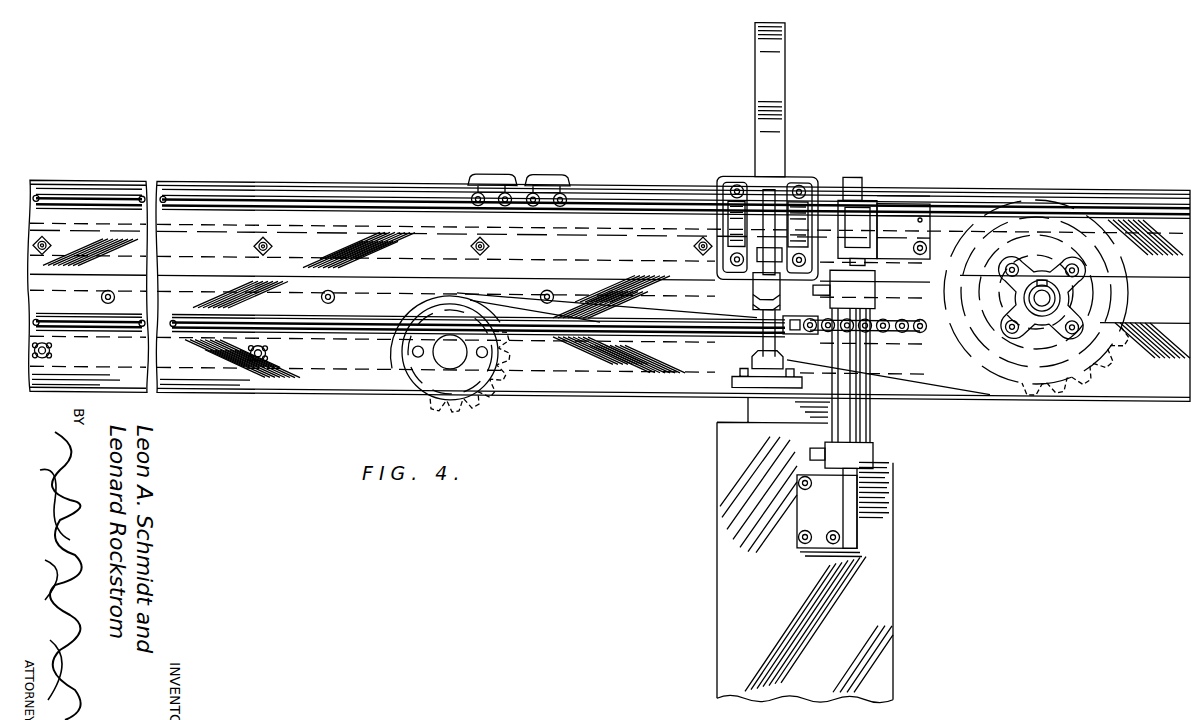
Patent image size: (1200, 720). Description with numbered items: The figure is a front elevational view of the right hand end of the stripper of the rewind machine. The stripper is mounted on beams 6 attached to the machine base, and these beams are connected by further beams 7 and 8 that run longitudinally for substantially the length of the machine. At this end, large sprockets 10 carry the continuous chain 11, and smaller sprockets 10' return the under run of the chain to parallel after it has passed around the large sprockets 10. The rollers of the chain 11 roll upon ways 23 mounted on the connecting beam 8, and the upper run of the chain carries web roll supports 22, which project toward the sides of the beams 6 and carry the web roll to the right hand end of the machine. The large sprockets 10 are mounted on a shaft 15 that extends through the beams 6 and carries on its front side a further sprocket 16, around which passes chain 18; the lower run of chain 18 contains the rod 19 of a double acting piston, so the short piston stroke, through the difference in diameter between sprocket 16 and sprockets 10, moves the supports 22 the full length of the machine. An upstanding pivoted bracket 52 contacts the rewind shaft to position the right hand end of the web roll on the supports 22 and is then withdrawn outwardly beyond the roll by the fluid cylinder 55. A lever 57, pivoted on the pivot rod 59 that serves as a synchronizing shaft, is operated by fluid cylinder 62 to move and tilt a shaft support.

The beams 6 is at (262, 391).
The beam 7 is at (288, 368).
The beam 8 is at (93, 221).
The sprockets 10 is at (1052, 297).
The smaller sprockets 10' is at (464, 361).
The chain 11 is at (258, 288).
The shaft 15 is at (1043, 294).
The sprocket 16 is at (1030, 266).
The chain 18 is at (895, 312).
The rod 19 is at (378, 327).
The web roll supports 22 is at (512, 168).
The ways 23 is at (77, 202).
The pivoted bracket 52 is at (778, 140).
The fluid cylinder 55 is at (757, 338).
The lever 57 is at (862, 172).
The pivot rod 59 is at (352, 194).
The fluid cylinder 62 is at (855, 408).